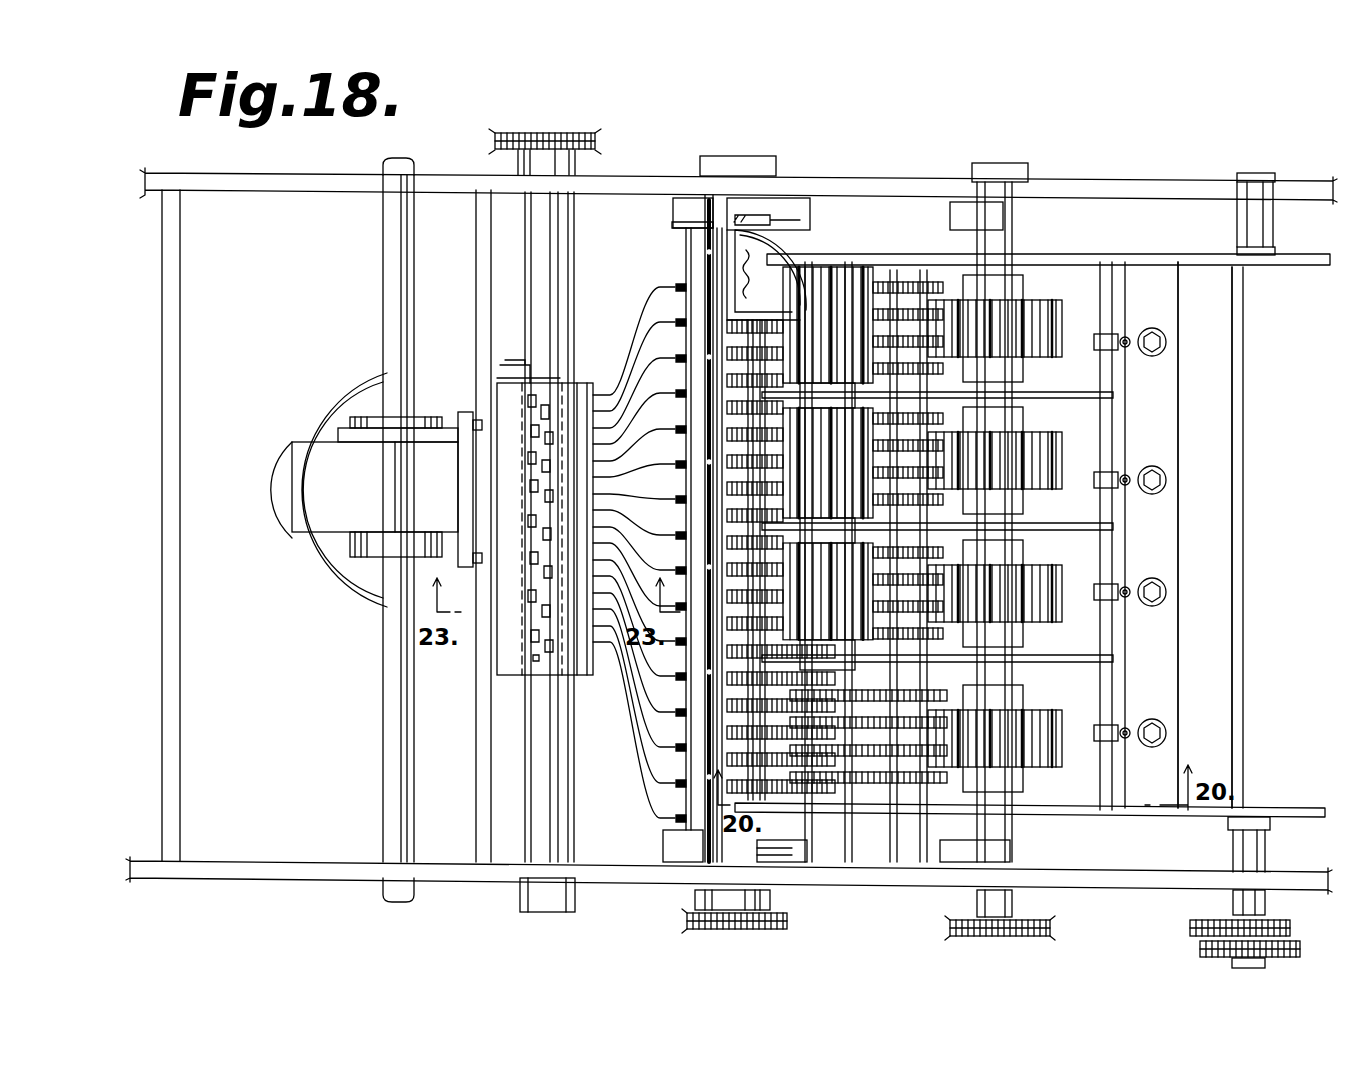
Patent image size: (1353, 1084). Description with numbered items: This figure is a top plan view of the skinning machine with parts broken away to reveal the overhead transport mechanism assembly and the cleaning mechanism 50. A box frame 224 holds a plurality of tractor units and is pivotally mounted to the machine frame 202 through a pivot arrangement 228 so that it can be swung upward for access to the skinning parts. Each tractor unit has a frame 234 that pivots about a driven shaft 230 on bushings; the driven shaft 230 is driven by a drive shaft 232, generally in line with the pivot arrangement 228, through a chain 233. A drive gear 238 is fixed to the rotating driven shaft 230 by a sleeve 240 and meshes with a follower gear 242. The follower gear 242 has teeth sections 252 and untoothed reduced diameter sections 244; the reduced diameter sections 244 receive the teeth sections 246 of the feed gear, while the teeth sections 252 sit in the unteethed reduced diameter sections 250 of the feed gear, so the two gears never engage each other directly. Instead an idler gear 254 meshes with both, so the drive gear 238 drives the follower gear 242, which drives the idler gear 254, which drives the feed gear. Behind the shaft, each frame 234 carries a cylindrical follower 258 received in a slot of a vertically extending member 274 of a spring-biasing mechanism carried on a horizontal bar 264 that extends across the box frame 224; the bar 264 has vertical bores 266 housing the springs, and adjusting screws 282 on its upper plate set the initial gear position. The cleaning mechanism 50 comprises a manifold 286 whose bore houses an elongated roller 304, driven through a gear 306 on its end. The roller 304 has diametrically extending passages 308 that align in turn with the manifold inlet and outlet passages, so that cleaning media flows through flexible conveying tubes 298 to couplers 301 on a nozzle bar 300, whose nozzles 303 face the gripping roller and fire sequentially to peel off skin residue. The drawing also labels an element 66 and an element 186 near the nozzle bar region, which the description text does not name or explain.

The cleaning mechanism 50 is at (421, 400).
The spring 66 is at (795, 304).
The pin 186 is at (767, 206).
The machine frame 202 is at (1275, 880).
The box frame 224 is at (1086, 254).
The pivot arrangement 228 is at (1265, 855).
The driven shaft 230 is at (1012, 905).
The drive shaft 232 is at (1240, 905).
The chain 233 is at (950, 936).
The frame 234 is at (1098, 815).
The drive gear 238 is at (1040, 762).
The sleeve 240 is at (1013, 817).
The follower gear 242 is at (900, 805).
The reduced diameter sections 244 is at (850, 790).
The teeth sections 246 is at (846, 884).
The unteethed reduced diameter sections 250 is at (775, 780).
The teeth sections 252 is at (955, 715).
The idler gear 254 is at (838, 280).
The follower 258 is at (1105, 648).
The bar 264 is at (1170, 306).
The bores 266 is at (1160, 355).
The vertically extending members 274 is at (1096, 348).
The adjusting screws 282 is at (1118, 474).
The manifold 286 is at (1176, 532).
The flexible conveying tubes 298 is at (660, 292).
The nozzle bar 300 is at (690, 269).
The coupler 301 is at (662, 815).
The nozzles 303 is at (672, 228).
The elongated roller 304 is at (560, 810).
The gear 306 is at (496, 134).
The diametrically extending passages 308 is at (560, 386).